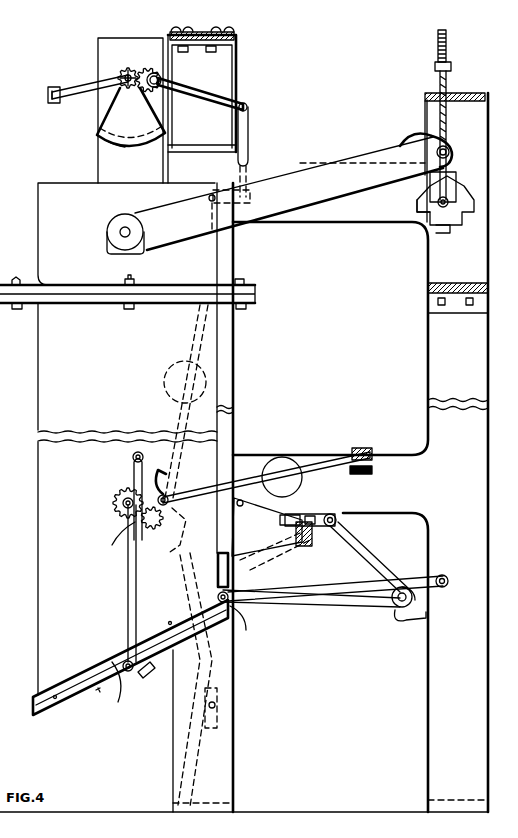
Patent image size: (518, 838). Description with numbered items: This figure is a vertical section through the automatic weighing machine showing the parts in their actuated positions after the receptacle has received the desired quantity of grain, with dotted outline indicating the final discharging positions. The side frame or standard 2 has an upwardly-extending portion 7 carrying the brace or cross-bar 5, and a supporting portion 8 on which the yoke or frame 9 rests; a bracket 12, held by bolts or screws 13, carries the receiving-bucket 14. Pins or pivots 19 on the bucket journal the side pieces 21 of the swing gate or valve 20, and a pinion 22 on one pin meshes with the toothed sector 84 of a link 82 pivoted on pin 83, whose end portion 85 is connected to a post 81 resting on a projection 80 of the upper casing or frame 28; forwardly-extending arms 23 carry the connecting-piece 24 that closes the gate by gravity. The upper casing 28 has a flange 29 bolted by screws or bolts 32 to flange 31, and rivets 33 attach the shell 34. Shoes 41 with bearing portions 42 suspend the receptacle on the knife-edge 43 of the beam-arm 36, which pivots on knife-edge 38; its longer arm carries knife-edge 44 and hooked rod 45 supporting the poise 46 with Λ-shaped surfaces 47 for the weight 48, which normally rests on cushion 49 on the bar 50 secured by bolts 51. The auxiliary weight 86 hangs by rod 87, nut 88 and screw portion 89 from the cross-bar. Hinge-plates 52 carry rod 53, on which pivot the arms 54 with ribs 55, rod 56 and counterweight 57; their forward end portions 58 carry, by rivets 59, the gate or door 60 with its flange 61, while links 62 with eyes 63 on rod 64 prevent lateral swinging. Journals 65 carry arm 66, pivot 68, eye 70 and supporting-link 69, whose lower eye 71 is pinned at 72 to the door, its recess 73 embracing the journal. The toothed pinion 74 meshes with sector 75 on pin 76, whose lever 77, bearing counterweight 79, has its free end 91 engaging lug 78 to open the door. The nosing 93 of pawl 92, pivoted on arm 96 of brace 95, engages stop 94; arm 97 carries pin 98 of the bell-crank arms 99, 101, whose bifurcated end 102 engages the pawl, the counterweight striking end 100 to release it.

The side frame or standard 2 is at (238, 250).
The brace or cross-bar 5 is at (425, 96).
The upwardly-extending portion 7 is at (425, 110).
The supporting portion 8 is at (207, 148).
The yoke or frame 9 is at (236, 62).
The bracket 12 is at (236, 41).
The bolts or screws 13 is at (212, 52).
The receiving-bucket 14 is at (98, 45).
The pins or pivots 19 is at (125, 66).
The swing gate or valve 20 is at (112, 146).
The side pieces 21 is at (131, 117).
The pinion 22 is at (128, 86).
The forwardly-extending arms 23 is at (78, 92).
The connecting-piece 24 is at (48, 93).
The upper casing or frame 28 is at (126, 234).
The flange 29 is at (58, 290).
The flange 31 is at (22, 310).
The screws or bolts 32 is at (16, 278).
The rivets 33 is at (127, 372).
The shell 34 is at (56, 568).
The beam-arm 36 is at (289, 193).
The knife-edge 38 is at (210, 204).
The fulcrum or shoe 41 is at (112, 222).
The bearing or receiving portion 42 is at (120, 254).
The knife-edge 43 is at (120, 234).
The knife-edge 44 is at (410, 150).
The link or hooked rod 45 is at (452, 166).
The poise or weight 46 is at (447, 228).
The Λ-shaped upper surfaces 47 is at (474, 203).
The weight 48 is at (418, 205).
The cushion or pad 49 is at (458, 286).
The bar or brace 50 is at (428, 290).
The screws or bolts 51 is at (470, 307).
The hinge-plates 52 is at (218, 598).
The rod 53 is at (240, 614).
The rearwardly-extending arms 54 is at (332, 608).
The rib 55 is at (376, 608).
The rod 56 is at (400, 609).
The counter weight or balance 57 is at (416, 604).
The forward end portions 58 is at (98, 692).
The rivets 59 is at (55, 698).
The closing gate or door 60 is at (190, 772).
The surrounding flange 61 is at (62, 684).
The links or rods 62 is at (390, 590).
The eye 63 is at (446, 570).
The rod 64 is at (449, 582).
The pins or journals 65 is at (120, 507).
The arm or link 66 is at (133, 482).
The pivot 68 is at (133, 456).
The supporting-link 69 is at (130, 577).
The eye 70 is at (143, 457).
The lower eye portion 71 is at (134, 667).
The bearing or pin 72 is at (244, 705).
The recessed or cut-away portion 73 is at (126, 527).
The toothed pinion 74 is at (115, 501).
The toothed sector 75 is at (163, 529).
The pivot or journal pin 76 is at (168, 495).
The arm or lever 77 is at (178, 410).
The lug or bracket 78 is at (372, 474).
The poise or counterweight 79 is at (164, 382).
The projection 80 is at (250, 197).
The post 81 is at (250, 127).
The link 82 is at (192, 98).
The pivot or pin 83 is at (162, 80).
The toothed sector 84 is at (150, 68).
The end portion 85 is at (249, 107).
The auxiliary weight 86 is at (430, 188).
The rod 87 is at (448, 120).
The nut 88 is at (452, 66).
The screw portion 89 is at (448, 42).
The free end 91 is at (370, 456).
The pivotal pawl or dog 92 is at (267, 527).
The nosing 93 is at (246, 556).
The stop 94 is at (218, 569).
The brace or piece 95 is at (302, 546).
The arm 96 is at (236, 506).
The arm 97 is at (340, 518).
The pivot or pin 98 is at (334, 513).
The arm 99 is at (350, 550).
The horizontally-projecting end 100 is at (428, 620).
The arm 101 is at (319, 509).
The bifurcated end 102 is at (279, 524).